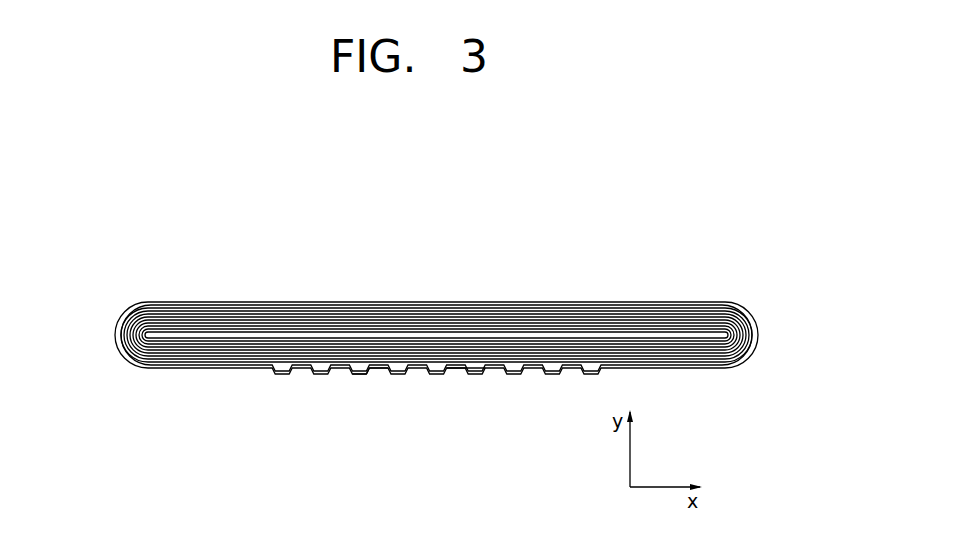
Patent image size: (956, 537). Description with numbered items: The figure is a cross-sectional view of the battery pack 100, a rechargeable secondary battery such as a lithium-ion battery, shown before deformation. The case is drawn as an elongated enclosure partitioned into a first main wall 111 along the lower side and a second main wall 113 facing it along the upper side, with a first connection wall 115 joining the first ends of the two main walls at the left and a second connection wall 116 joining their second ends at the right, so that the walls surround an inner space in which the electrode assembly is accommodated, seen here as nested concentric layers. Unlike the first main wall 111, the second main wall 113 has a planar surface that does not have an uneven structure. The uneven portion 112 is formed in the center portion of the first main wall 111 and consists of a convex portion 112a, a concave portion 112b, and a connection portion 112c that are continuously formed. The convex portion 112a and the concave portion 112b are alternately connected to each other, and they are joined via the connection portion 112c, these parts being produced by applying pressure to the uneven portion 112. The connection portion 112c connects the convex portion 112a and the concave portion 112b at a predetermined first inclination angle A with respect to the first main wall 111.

The battery pack 100 is at (647, 222).
The first main wall 111 is at (190, 368).
The uneven portion 112 is at (309, 376).
The convex portion 112a is at (362, 372).
The concave portion 112b is at (378, 369).
The connection portion 112c is at (369, 371).
The second main wall 113 is at (201, 302).
The first connection wall 115 is at (117, 345).
The second connection wall 116 is at (758, 337).
The first inclination angle A is at (467, 373).